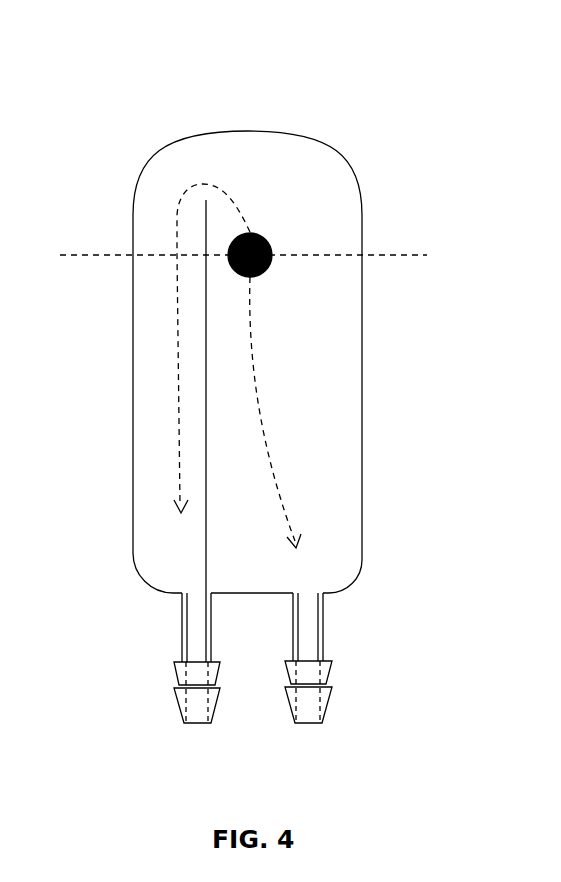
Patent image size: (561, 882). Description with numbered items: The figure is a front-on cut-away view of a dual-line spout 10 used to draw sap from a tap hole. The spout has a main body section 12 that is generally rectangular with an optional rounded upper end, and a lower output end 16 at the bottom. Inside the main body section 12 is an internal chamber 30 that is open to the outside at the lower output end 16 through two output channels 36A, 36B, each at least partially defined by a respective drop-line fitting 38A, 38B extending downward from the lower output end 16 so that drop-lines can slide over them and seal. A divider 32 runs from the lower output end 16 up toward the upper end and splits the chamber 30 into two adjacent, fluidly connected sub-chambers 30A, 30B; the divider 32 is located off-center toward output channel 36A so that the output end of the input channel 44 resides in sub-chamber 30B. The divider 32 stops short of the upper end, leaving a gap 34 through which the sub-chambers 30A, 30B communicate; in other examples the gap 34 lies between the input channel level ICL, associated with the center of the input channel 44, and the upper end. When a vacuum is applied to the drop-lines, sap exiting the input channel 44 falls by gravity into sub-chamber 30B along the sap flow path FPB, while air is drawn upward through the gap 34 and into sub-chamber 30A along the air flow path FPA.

The dual-line spout 10 is at (283, 72).
The main body section 12 is at (122, 265).
The lower output end 16 is at (170, 593).
The internal chamber 30 is at (287, 154).
The sub-chamber 30A is at (145, 393).
The sub-chamber 30B is at (348, 278).
The divider 32 is at (206, 325).
The gap 34 is at (198, 165).
The output channel 36A is at (193, 625).
The output channel 36B is at (312, 640).
The drop-line fitting 38A is at (163, 677).
The drop-line fitting 38B is at (349, 693).
The input channel 44 is at (272, 246).
The input channel level ICL is at (398, 253).
The air flow path FPA is at (177, 246).
The sap flow path FPB is at (268, 428).